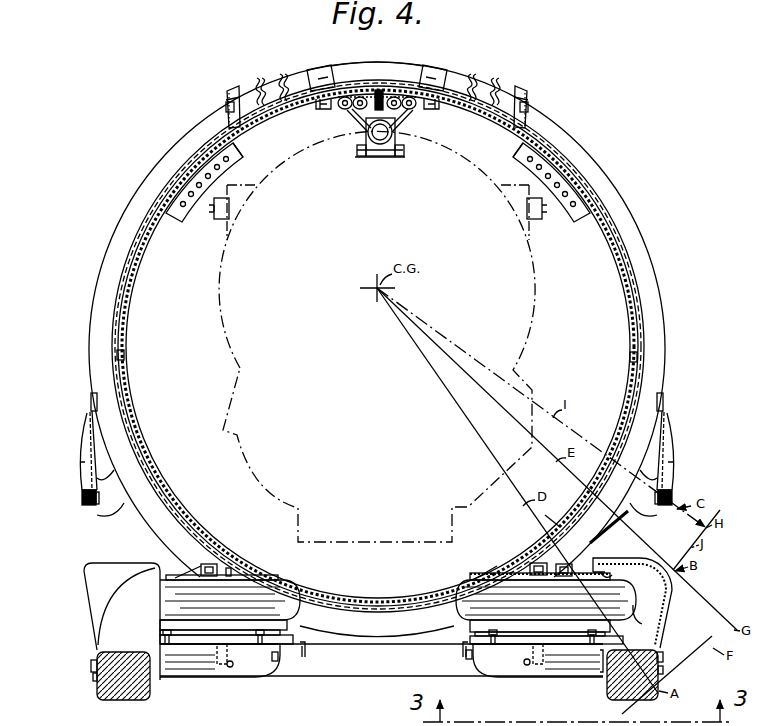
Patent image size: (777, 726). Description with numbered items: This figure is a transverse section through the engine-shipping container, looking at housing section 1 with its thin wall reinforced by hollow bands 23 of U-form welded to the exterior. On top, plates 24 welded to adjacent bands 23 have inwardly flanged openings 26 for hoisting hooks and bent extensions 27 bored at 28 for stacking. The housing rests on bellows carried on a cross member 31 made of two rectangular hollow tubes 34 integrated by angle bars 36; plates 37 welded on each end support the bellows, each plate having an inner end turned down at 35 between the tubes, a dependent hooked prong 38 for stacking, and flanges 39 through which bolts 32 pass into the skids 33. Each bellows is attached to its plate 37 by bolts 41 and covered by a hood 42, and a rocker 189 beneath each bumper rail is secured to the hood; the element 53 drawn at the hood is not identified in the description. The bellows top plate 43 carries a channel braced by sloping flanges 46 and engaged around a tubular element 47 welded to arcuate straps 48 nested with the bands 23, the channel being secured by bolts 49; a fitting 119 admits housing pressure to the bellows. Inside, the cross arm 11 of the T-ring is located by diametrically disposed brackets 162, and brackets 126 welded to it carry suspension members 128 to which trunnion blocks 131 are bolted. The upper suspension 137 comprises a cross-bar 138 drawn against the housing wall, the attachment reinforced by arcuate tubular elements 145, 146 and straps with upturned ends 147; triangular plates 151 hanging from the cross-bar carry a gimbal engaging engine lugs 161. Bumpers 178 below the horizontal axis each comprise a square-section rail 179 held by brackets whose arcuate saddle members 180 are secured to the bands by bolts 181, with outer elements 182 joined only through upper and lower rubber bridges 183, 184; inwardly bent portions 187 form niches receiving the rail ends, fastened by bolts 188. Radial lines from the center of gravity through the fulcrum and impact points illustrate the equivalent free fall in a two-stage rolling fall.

The housing section 1 is at (121, 322).
The cross arm of the T-ring 11 is at (138, 268).
The hollow band 23 is at (262, 88).
The plate 24 is at (226, 100).
The inwardly flanged opening 26 is at (226, 108).
The bent extension 27 is at (227, 91).
The bore 28 is at (233, 88).
The cross member 31 is at (388, 680).
The bolt 32 is at (92, 661).
The skid 33 is at (100, 695).
The hollow tube 34 is at (332, 677).
The turned-down inner end of the plate 35 is at (306, 651).
The angle bar 36 is at (598, 677).
The plate 37 is at (278, 655).
The hooked prong 38 is at (232, 667).
The dependent flange 39 is at (93, 679).
The bolt 41 is at (172, 641).
The hood 42 is at (655, 559).
The top plate of the bellows 43 is at (604, 582).
The sloping flange 46 is at (180, 576).
The tubular element 47 is at (540, 570).
The arcuate strap 48 is at (553, 513).
The bolt 49 is at (211, 563).
The fender arch 53 is at (635, 610).
The fitting 119 is at (530, 568).
The bracket 126 is at (234, 149).
The suspension member 128 is at (234, 168).
The block 131 is at (214, 216).
The upper suspension 137 is at (344, 118).
The cross-bar 138 is at (440, 109).
The arcuate tubular element 145 is at (372, 62).
The arcuate tubular element 146 is at (288, 76).
The upwardly turned end of the strap 147 is at (322, 67).
The plate 151 is at (400, 120).
The lug 161 is at (365, 153).
The bracket 162 is at (125, 356).
The bumper 178 is at (695, 449).
The bumper rail 179 is at (672, 494).
The arcuate saddle member 180 is at (663, 404).
The bolt 181 is at (663, 396).
The outer element of the bracket 182 is at (671, 442).
The upper bridge 183 is at (665, 422).
The lower bridge 184 is at (657, 514).
The inwardly bent portion 187 is at (674, 470).
The bolt 188 is at (675, 497).
The rocker 189 is at (678, 575).